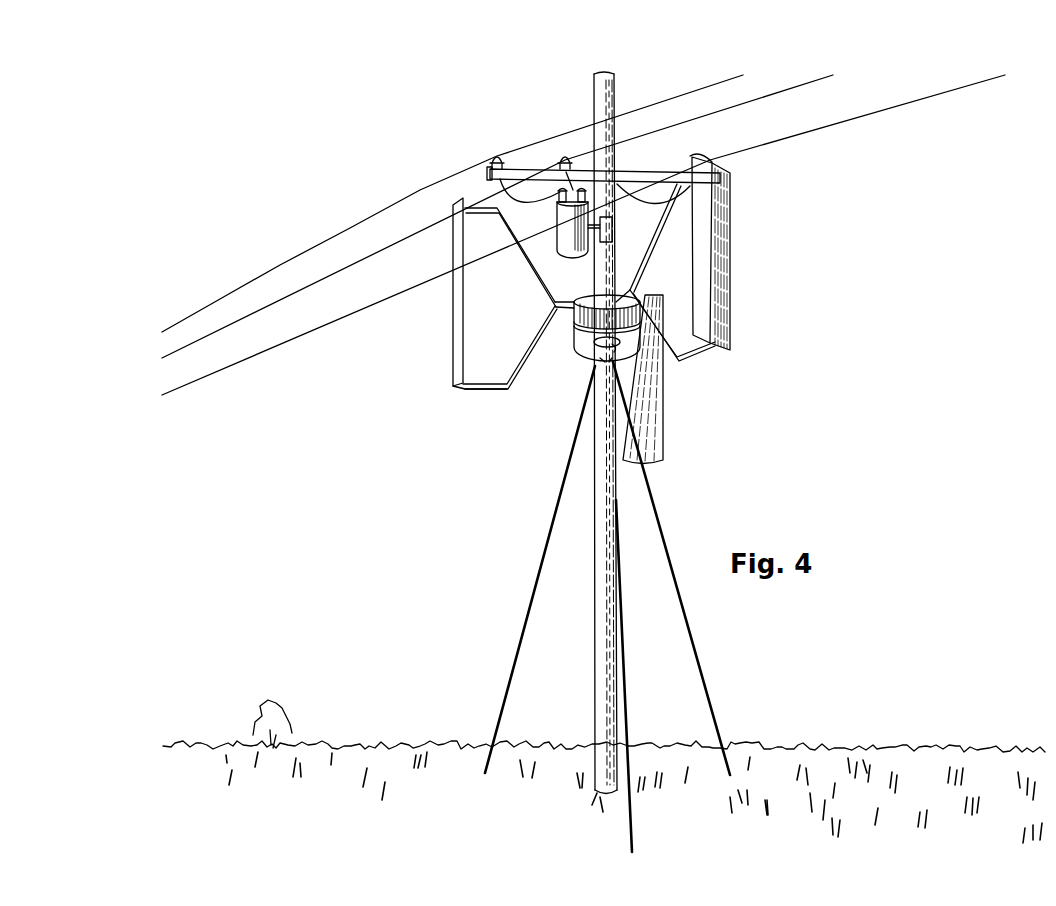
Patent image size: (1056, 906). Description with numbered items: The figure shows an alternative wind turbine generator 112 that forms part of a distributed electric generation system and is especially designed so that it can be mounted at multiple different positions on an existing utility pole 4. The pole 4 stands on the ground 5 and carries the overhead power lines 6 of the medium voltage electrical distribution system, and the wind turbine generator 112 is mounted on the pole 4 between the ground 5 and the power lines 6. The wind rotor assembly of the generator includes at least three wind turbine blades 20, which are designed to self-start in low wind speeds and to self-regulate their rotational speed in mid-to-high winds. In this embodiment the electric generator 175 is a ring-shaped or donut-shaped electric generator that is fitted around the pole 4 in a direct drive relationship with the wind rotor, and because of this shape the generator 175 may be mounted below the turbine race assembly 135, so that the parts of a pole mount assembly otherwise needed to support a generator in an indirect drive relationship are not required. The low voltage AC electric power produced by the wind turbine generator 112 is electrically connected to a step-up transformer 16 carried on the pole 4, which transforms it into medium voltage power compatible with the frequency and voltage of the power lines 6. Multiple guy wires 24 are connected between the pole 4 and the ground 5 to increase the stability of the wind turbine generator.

The pole 4 is at (597, 74).
The ground 5 is at (817, 764).
The overhead power lines 6 is at (302, 336).
The step-up transformer 16 is at (574, 259).
The wind turbine blades 20 is at (724, 252).
The guy wires 24 is at (699, 656).
The alternative wind turbine generator 112 is at (621, 309).
The turbine race assembly 135 is at (575, 322).
The electric generator 175 is at (636, 346).